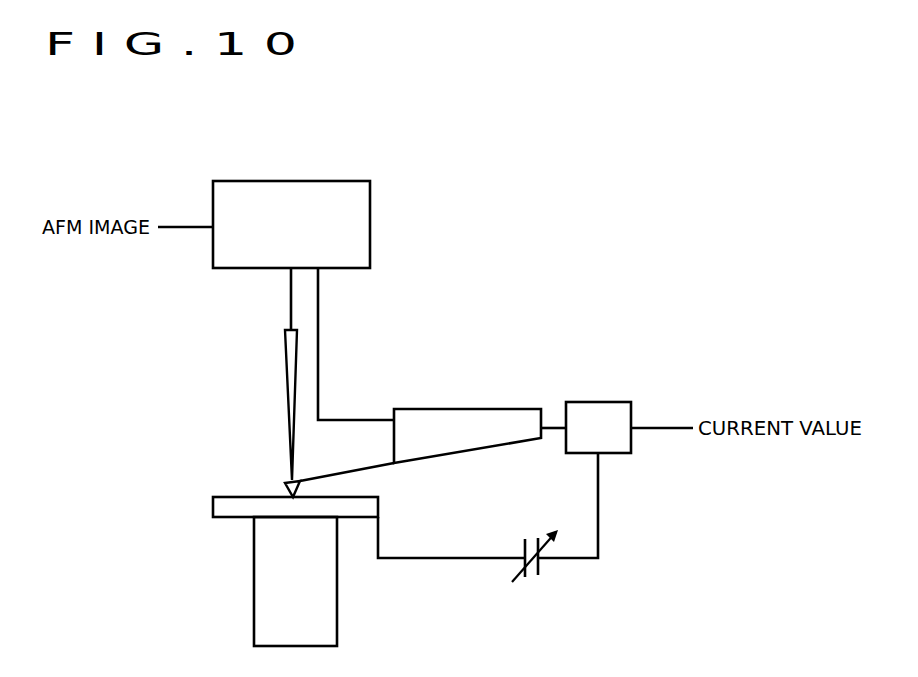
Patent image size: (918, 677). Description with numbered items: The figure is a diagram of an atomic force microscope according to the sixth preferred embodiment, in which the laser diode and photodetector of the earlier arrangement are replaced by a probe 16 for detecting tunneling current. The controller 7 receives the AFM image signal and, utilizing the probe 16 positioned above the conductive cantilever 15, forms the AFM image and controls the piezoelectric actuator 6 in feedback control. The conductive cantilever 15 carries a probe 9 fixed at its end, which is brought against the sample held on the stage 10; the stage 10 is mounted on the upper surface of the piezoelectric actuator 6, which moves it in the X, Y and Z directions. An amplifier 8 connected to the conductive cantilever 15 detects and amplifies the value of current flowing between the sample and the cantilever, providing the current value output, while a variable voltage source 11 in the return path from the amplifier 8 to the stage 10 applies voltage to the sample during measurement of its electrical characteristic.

The controller 7 is at (276, 181).
The probe 16 is at (285, 410).
The probe 9 is at (284, 490).
The stage 10 is at (370, 508).
The piezoelectric actuator 6 is at (323, 597).
The conductive cantilever 15 is at (463, 409).
The amplifier 8 is at (607, 402).
The variable voltage source 11 is at (545, 565).